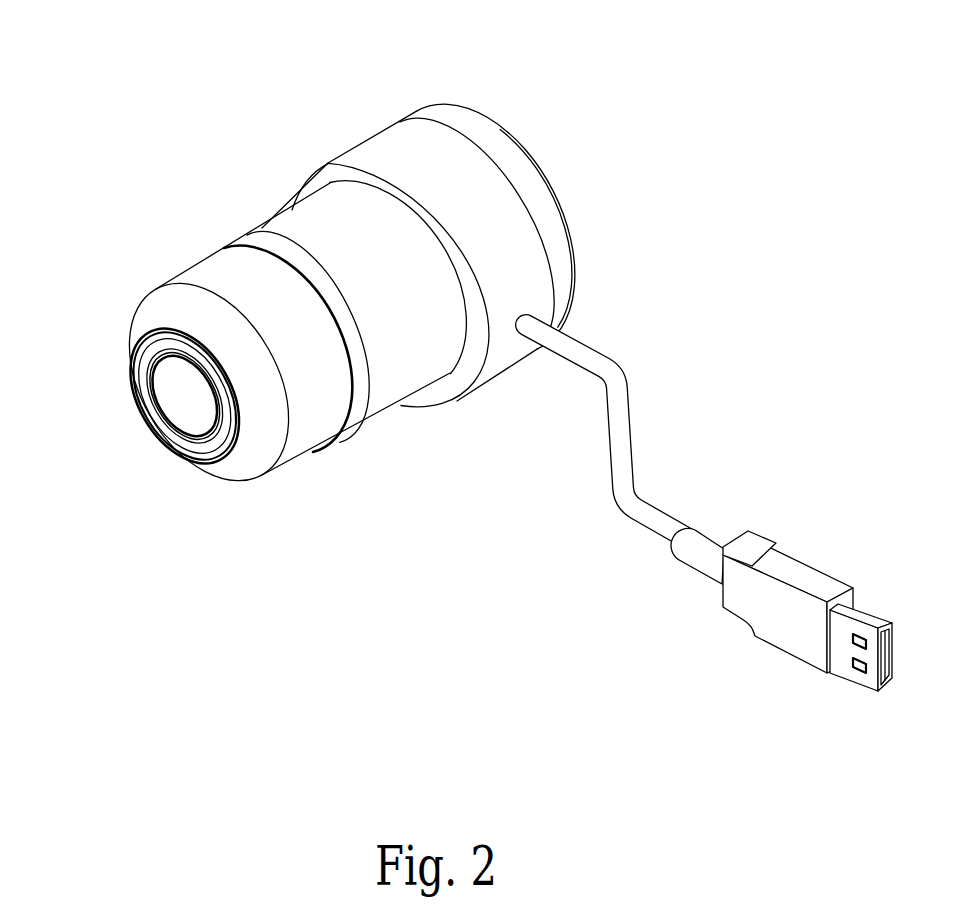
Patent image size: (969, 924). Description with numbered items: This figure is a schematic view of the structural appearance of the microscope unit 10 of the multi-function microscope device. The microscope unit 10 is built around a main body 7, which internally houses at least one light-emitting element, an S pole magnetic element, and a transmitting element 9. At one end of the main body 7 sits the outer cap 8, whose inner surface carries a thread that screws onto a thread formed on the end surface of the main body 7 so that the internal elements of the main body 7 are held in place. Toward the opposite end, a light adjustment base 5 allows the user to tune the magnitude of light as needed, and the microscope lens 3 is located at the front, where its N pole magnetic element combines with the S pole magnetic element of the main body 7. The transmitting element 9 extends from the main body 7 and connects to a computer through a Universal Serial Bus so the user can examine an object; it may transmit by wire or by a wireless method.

The microscope unit 10 is at (115, 147).
The microscope lens 3 is at (252, 457).
The light adjustment base 5 is at (360, 393).
The main body 7 is at (398, 155).
The outer cap 8 is at (528, 177).
The transmitting element 9 is at (785, 617).